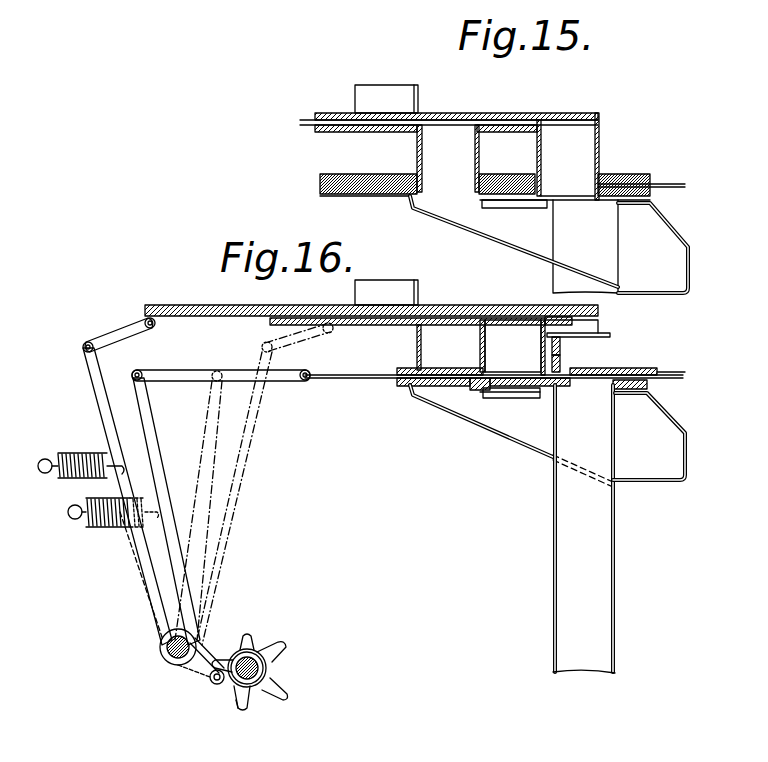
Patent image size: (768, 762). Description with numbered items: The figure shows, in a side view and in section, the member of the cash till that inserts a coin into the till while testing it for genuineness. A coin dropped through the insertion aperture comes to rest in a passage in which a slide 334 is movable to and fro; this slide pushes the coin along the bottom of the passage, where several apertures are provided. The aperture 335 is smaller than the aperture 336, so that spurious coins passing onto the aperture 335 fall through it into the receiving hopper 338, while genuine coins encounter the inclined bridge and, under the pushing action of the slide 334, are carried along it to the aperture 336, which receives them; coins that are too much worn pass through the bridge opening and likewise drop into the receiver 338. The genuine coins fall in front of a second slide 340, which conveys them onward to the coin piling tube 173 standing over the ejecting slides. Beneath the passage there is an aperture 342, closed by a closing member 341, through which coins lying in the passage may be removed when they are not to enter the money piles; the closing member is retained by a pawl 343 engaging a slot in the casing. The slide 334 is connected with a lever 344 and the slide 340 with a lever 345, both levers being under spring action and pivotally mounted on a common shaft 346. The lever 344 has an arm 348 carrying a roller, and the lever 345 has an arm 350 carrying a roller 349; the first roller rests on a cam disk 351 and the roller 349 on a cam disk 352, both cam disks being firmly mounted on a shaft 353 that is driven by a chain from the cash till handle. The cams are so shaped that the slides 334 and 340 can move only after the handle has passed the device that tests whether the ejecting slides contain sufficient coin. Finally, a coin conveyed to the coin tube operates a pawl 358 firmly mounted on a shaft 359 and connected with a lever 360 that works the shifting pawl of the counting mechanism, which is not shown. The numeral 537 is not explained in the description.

In FIG. 16, the coin piling tube 173 is at (566, 552).
In FIG. 15, the slide 334 is at (320, 126).
In FIG. 16, the slide 334 is at (186, 305).
In FIG. 15, the aperture 335 is at (401, 126).
In FIG. 16, the aperture 336 is at (498, 328).
In FIG. 15, the receiving hopper 338 is at (496, 228).
In FIG. 16, the receiving hopper 338 is at (660, 480).
In FIG. 16, the slide 340 is at (352, 380).
In FIG. 16, the closing member 341 is at (496, 386).
In FIG. 16, the aperture 342 is at (531, 390).
In FIG. 16, the pawl 343 is at (680, 380).
In FIG. 16, the lever 344 is at (100, 390).
In FIG. 16, the lever 345 is at (155, 445).
In FIG. 16, the shaft 346 is at (160, 645).
In FIG. 16, the arm 348 is at (208, 678).
In FIG. 16, the roller 349 is at (220, 660).
In FIG. 16, the arm 350 is at (200, 637).
In FIG. 16, the cam disk 351 is at (236, 705).
In FIG. 15, the cam disk 352 is at (357, 101).
In FIG. 16, the cam disk 352 is at (262, 655).
In FIG. 16, the shaft 353 is at (264, 672).
In FIG. 16, the pawl 358 is at (561, 363).
In FIG. 16, the shaft 359 is at (561, 352).
In FIG. 16, the lever 360 is at (610, 334).
In FIG. 15, the block 537 is at (583, 156).